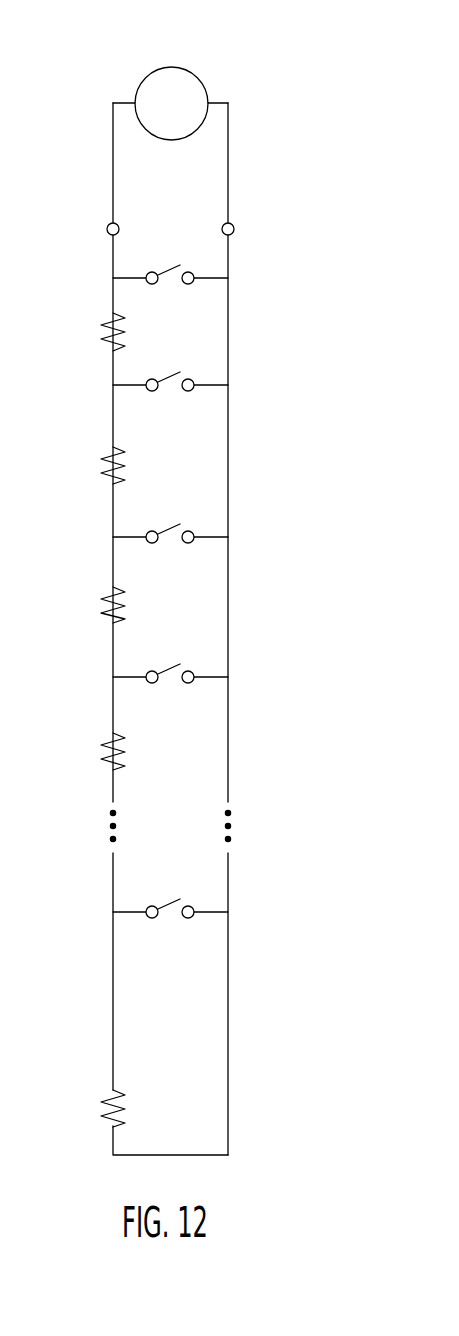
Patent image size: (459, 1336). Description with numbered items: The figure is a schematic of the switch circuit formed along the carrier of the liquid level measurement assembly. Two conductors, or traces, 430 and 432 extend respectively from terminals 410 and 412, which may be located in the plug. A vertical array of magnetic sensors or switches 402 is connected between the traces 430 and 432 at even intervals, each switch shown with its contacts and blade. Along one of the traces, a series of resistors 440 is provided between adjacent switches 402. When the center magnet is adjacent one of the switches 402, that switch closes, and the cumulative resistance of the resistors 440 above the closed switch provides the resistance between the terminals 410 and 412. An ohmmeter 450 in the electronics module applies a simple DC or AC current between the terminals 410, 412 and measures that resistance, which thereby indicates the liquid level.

The switch 402 is at (160, 925).
The terminal 410 is at (107, 229).
The terminal 412 is at (234, 229).
The conductor 430 is at (113, 420).
The conductor 432 is at (228, 432).
The resistor 440 is at (86, 351).
The ohmmeter 450 is at (228, 78).